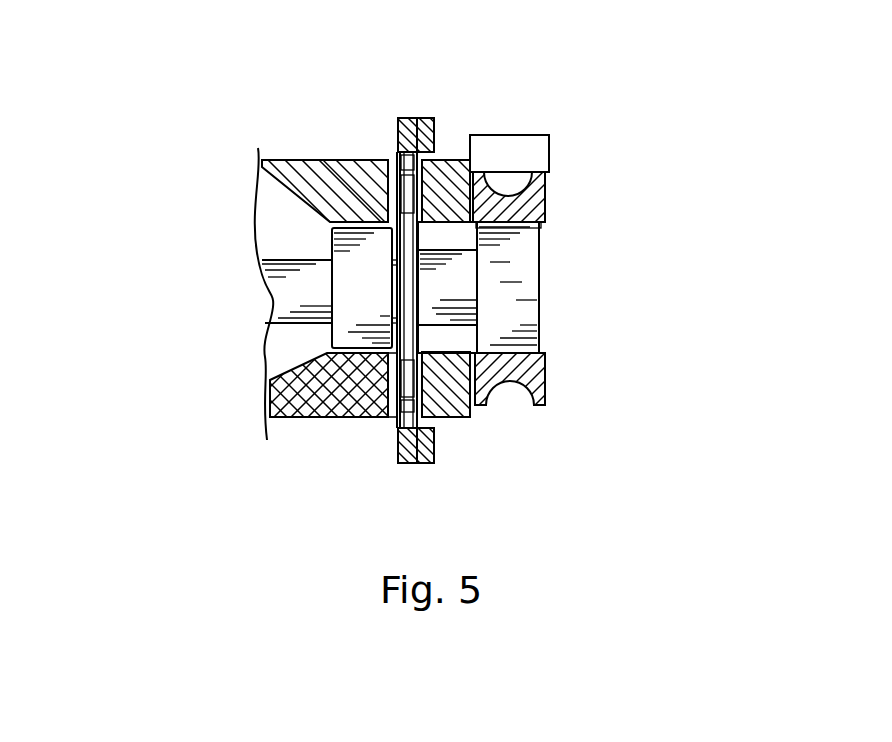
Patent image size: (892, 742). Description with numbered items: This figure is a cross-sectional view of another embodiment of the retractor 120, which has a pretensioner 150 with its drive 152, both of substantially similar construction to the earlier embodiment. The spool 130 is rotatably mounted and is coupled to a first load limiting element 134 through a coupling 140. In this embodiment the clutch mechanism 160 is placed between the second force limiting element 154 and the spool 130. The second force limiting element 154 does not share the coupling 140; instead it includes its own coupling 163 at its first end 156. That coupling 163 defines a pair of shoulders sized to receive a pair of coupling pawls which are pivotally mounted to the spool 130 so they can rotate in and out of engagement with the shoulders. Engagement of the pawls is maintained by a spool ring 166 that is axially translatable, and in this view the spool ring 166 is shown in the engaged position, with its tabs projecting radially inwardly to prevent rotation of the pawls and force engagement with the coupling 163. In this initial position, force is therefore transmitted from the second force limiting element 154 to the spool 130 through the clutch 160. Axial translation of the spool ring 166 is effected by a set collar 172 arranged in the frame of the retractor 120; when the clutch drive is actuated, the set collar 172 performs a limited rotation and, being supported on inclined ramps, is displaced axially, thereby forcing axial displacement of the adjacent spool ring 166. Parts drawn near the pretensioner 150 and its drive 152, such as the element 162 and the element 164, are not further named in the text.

The retractor 120 is at (198, 103).
The spool 130 is at (330, 190).
The first load limiting element 134 is at (290, 292).
The coupling 140 is at (347, 323).
The pretensioner 150 is at (567, 120).
The drive 152 is at (530, 152).
The second force limiting element 154 is at (447, 295).
The first end 156 is at (427, 303).
The clutch mechanism 160 is at (438, 100).
The output shaft 162 is at (520, 302).
The coupling 163 is at (323, 160).
The bearing race 164 is at (530, 205).
The spool ring 166 is at (397, 132).
The set collar 172 is at (417, 120).